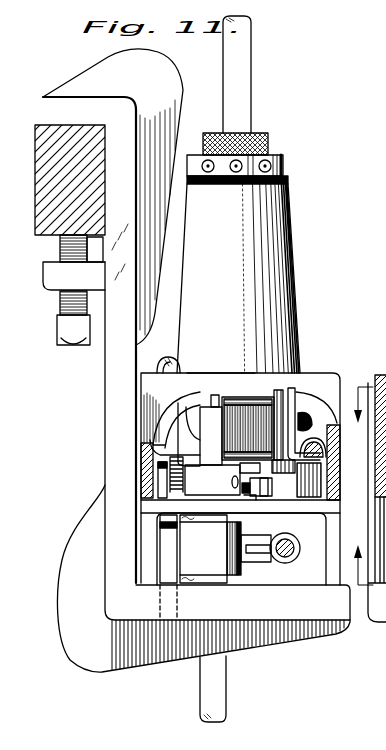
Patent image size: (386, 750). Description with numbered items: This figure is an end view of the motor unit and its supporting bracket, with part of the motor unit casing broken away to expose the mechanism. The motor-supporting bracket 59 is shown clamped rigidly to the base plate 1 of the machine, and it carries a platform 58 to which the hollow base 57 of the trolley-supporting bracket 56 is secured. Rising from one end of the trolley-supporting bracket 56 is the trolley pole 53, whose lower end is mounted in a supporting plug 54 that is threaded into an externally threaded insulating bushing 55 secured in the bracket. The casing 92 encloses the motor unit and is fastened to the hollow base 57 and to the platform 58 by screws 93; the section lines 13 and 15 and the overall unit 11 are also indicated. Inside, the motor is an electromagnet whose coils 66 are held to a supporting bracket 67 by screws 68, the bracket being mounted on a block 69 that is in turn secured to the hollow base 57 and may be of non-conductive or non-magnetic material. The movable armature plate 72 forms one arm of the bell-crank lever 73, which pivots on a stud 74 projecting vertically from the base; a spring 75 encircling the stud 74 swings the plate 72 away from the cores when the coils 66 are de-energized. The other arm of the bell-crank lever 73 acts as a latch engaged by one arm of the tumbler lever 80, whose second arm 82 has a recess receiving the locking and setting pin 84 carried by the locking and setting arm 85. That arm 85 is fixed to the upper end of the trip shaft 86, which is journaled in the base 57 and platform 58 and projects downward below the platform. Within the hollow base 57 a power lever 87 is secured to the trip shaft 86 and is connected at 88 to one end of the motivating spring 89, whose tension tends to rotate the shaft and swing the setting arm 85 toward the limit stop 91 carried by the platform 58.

The base plate 1 is at (40, 123).
The fastening device 11 is at (237, 400).
The section line 13 is at (360, 419).
The section line 15 is at (360, 556).
The trolley pole 53 is at (240, 61).
The supporting plug 54 is at (283, 166).
The insulating bushing 55 is at (288, 183).
The trolley-supporting bracket 56 is at (275, 245).
The hollow base 57 is at (140, 532).
The platform 58 is at (298, 612).
The motor-supporting bracket 59 is at (180, 80).
The coils 66 is at (216, 403).
The supporting bracket 67 is at (291, 400).
The screws 68 is at (303, 418).
The block 69 is at (317, 473).
The plate 72 is at (190, 430).
The bell-crank lever 73 is at (152, 438).
The stud 74 is at (180, 437).
The spring 75 is at (155, 495).
The tumbler lever 80 is at (323, 492).
The second arm 82 is at (267, 477).
The locking and setting pin 84 is at (258, 497).
The locking and setting arm 85 is at (216, 491).
The trip shaft 86 is at (198, 405).
The power lever 87 is at (210, 555).
The spring attachment point 88 is at (258, 555).
The motivating spring 89 is at (291, 557).
The limit stop 91 is at (165, 468).
The casing 92 is at (383, 373).
The screws 93 is at (157, 365).